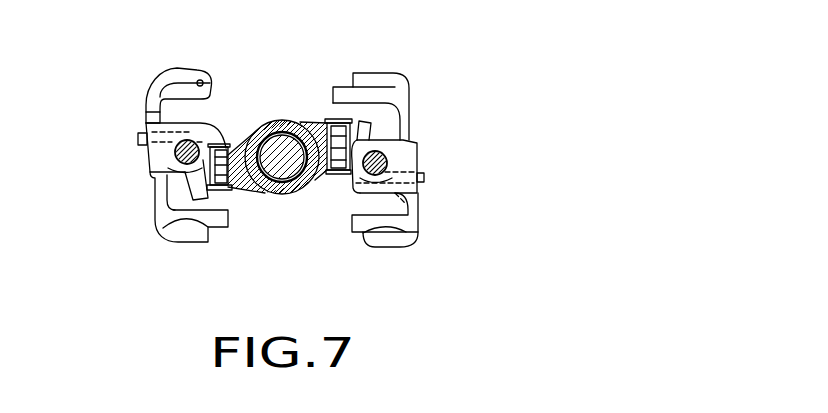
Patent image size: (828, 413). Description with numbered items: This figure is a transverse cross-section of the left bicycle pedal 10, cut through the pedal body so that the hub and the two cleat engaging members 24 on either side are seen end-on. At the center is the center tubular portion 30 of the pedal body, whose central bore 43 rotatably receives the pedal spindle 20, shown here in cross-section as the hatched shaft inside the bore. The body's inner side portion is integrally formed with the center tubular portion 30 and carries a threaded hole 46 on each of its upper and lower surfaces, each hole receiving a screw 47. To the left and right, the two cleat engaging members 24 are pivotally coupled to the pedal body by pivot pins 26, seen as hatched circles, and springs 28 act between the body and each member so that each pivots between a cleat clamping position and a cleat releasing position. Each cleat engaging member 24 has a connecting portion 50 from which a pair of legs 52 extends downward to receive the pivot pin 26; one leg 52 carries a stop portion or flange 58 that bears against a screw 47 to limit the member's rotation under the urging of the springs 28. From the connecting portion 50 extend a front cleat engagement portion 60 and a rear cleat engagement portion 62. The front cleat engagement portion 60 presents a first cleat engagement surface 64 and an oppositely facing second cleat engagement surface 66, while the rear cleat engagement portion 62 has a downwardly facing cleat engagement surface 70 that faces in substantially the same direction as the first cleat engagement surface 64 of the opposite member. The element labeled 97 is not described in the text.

The bicycle pedal 10 is at (457, 50).
The pedal shaft or spindle 20 is at (278, 157).
The cleat engaging member 24 is at (144, 113).
The pivot pin 26 is at (174, 155).
The spring 28 is at (152, 186).
The center tubular portion 30 is at (289, 135).
The central bore 43 is at (281, 195).
The threaded hole 46 is at (284, 164).
The screw 47 is at (226, 191).
The connecting portion 50 is at (143, 122).
The leg 52 is at (282, 171).
The stop portion or flange 58 is at (219, 143).
The front cleat engagement portion 60 is at (294, 154).
The rear cleat engagement portion 62 is at (172, 67).
The first cleat engagement surface 64 is at (176, 229).
The second cleat engagement surface 66 is at (226, 228).
The cleat engagement surface 70 is at (207, 72).
The tab 97 is at (334, 118).